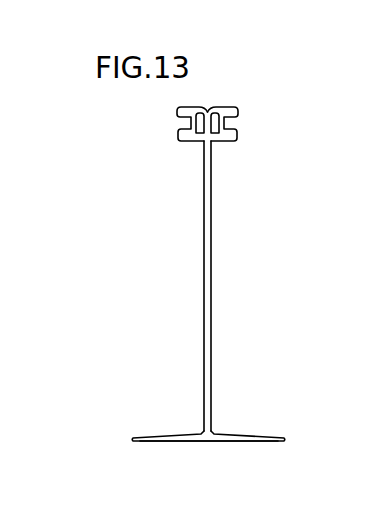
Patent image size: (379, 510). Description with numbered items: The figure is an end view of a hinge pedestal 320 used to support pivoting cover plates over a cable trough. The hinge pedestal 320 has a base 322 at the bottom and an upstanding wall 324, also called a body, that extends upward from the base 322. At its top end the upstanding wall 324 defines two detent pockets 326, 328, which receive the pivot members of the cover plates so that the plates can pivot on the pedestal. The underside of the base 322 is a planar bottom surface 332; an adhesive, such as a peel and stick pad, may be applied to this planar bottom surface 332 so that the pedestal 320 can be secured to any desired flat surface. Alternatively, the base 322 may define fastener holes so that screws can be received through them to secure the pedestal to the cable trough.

The hinge pedestal 320 is at (215, 262).
The base 322 is at (247, 437).
The upstanding wall 324 is at (211, 243).
The detent pocket 326 is at (190, 113).
The detent pocket 328 is at (226, 128).
The planar bottom surface 332 is at (158, 441).